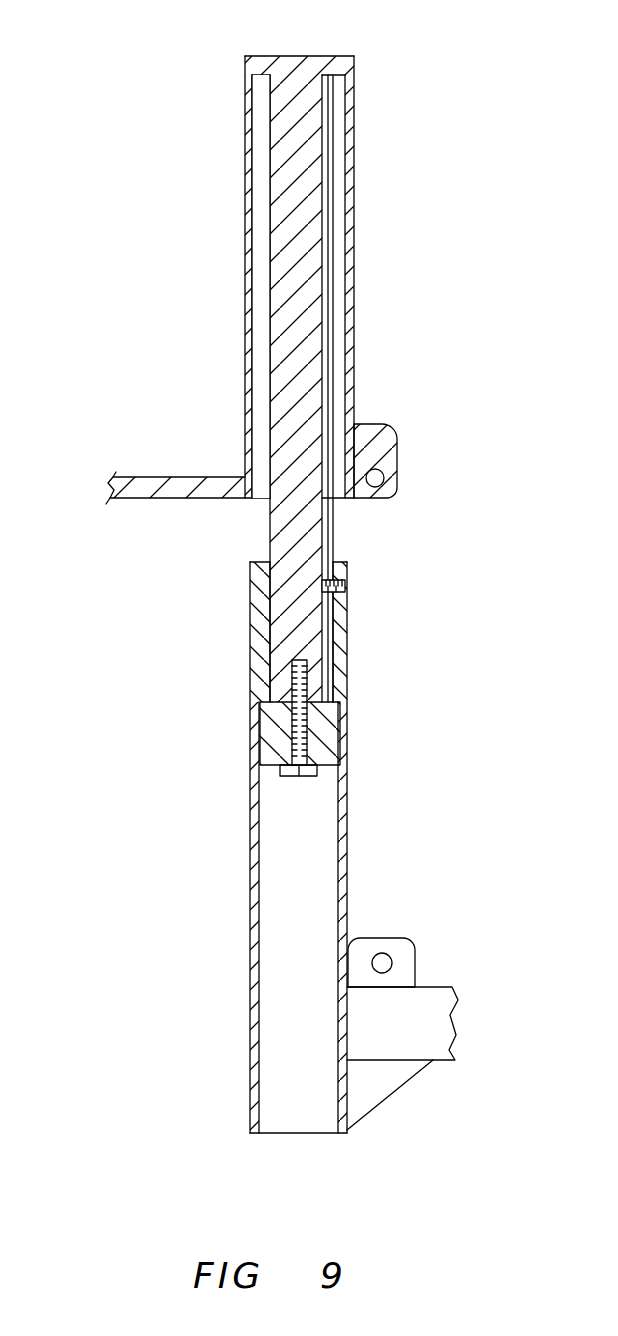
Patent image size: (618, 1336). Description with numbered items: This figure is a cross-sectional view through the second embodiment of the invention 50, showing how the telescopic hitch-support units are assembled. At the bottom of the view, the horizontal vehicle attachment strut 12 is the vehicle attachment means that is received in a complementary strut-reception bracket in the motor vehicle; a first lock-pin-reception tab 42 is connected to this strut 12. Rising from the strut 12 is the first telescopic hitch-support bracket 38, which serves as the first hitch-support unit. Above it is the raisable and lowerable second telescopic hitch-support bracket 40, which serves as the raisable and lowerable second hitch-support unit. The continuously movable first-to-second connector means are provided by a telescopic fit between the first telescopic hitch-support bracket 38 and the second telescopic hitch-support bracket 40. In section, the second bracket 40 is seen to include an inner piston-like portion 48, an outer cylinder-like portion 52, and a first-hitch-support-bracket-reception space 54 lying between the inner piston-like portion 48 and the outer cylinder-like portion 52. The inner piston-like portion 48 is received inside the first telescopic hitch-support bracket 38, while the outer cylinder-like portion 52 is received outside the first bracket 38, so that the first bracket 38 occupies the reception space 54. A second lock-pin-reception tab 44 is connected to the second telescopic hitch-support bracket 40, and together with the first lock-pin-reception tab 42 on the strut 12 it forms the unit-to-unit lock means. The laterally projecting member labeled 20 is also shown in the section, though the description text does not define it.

The second embodiment of the invention 50 is at (224, 226).
The first-hitch-support-bracket-reception space 54 is at (260, 240).
The raisable and lowerable second telescopic hitch-support bracket 40 is at (243, 320).
The inner piston-like portion 48 is at (318, 250).
The outer cylinder-like portion 52 is at (352, 363).
The second lock-pin-reception tab 44 is at (385, 450).
The arm 20 is at (137, 470).
The first telescopic hitch-support bracket 38 is at (253, 963).
The first lock-pin-reception tab 42 is at (395, 937).
The horizontal vehicle attachment strut 12 is at (430, 995).